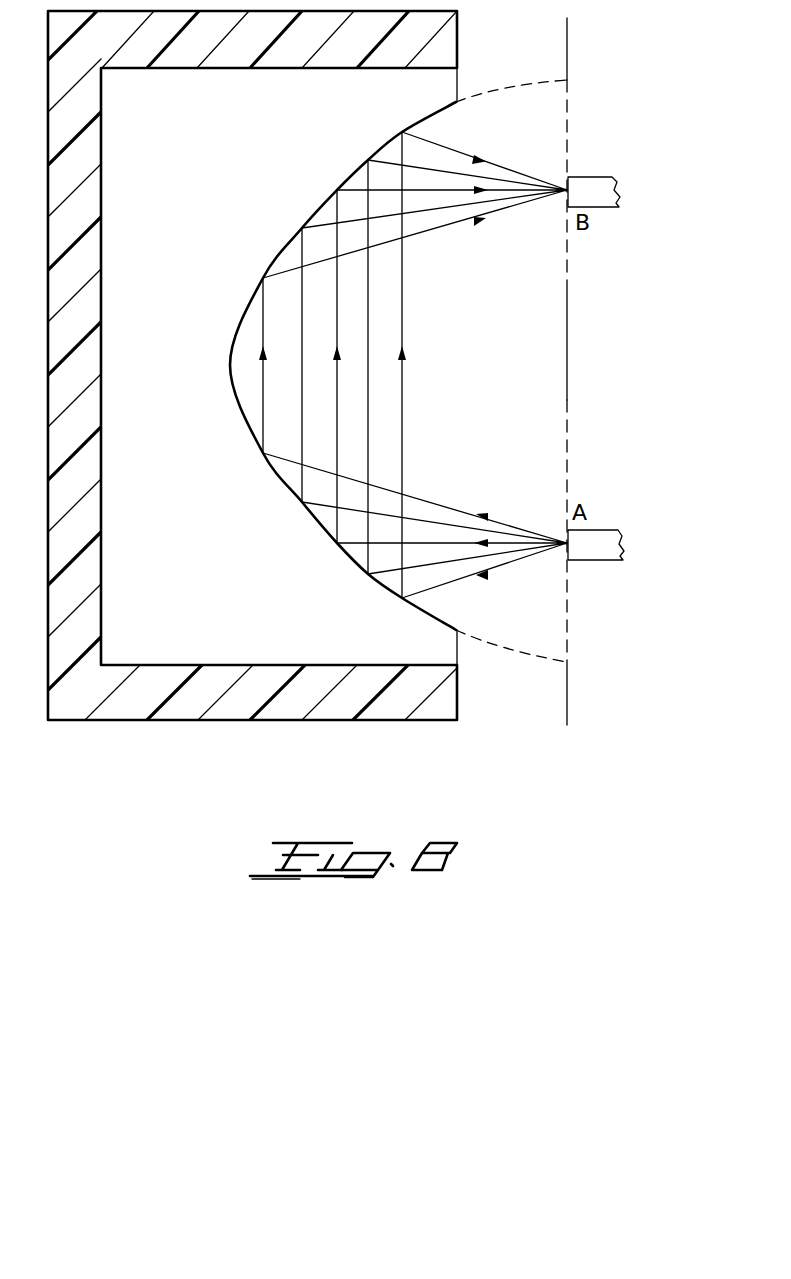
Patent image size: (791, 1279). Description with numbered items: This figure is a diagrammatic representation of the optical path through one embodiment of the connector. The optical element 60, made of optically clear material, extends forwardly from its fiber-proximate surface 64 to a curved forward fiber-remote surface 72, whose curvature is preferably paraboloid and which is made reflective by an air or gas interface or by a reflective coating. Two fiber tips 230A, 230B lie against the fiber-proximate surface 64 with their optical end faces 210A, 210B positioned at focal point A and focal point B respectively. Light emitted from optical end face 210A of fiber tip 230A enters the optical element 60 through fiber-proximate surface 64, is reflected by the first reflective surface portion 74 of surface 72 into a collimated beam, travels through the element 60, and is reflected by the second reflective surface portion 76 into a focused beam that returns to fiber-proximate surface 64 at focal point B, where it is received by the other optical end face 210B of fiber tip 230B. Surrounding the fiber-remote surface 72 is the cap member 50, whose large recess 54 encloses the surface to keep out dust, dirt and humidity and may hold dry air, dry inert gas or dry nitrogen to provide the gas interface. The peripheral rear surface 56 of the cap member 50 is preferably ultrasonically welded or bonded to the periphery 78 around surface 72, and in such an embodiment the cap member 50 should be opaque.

The cap member 50 is at (240, 731).
The large recess 54 is at (175, 378).
The peripheral rear surface 56 is at (458, 46).
The optical element 60 is at (508, 378).
The fiber-proximate surface 64 is at (568, 452).
The fiber-remote surface 72 is at (272, 481).
The first reflective surface portion 74 is at (338, 549).
The second reflective surface portion 76 is at (322, 207).
The periphery 78 is at (432, 34).
The optical end face 210A is at (565, 557).
The optical end face 210B is at (562, 188).
The fiber tip 230A is at (606, 530).
The fiber tip 230B is at (597, 200).